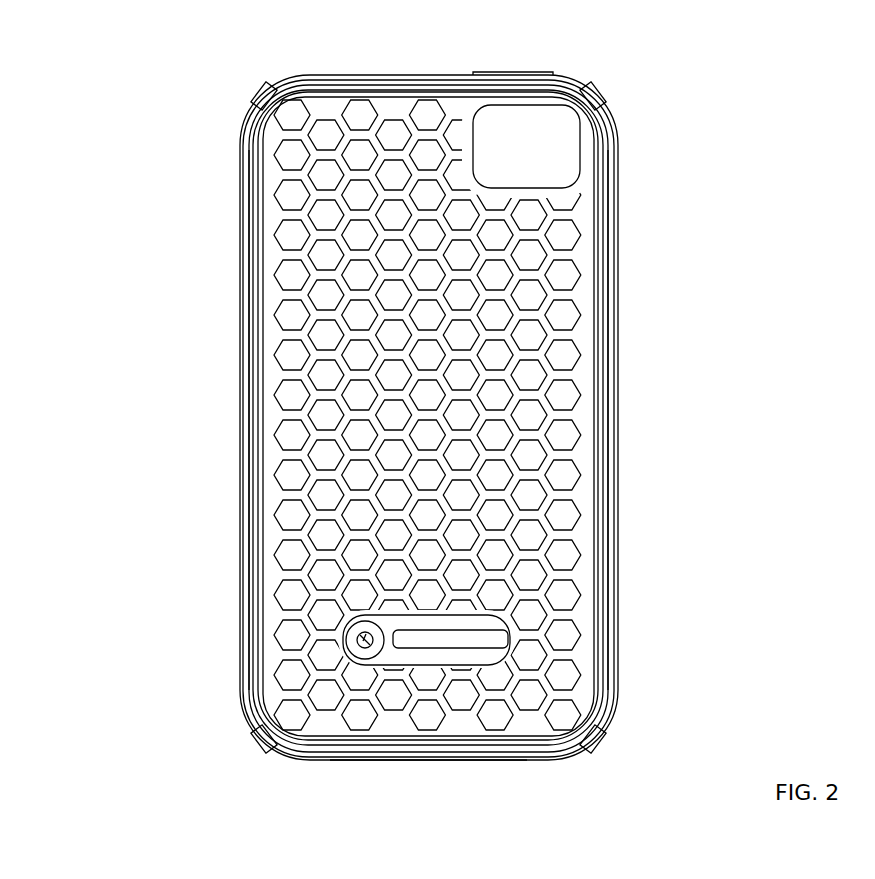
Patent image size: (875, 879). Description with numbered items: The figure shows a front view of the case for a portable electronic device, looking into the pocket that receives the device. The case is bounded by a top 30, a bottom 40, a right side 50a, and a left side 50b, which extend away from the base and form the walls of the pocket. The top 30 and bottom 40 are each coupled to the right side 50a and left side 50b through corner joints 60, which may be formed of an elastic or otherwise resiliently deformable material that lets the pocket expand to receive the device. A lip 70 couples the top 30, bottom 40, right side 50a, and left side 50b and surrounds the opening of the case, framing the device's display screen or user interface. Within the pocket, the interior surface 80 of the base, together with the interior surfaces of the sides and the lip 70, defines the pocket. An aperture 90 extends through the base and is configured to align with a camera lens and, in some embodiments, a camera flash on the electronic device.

The top 30 is at (425, 68).
The bottom 40 is at (435, 773).
The right side 50a is at (632, 352).
The left side 50b is at (229, 403).
The corner joints 60 is at (263, 90).
The lip 70 is at (345, 98).
The interior surface 80 is at (470, 435).
The aperture 90 is at (529, 126).